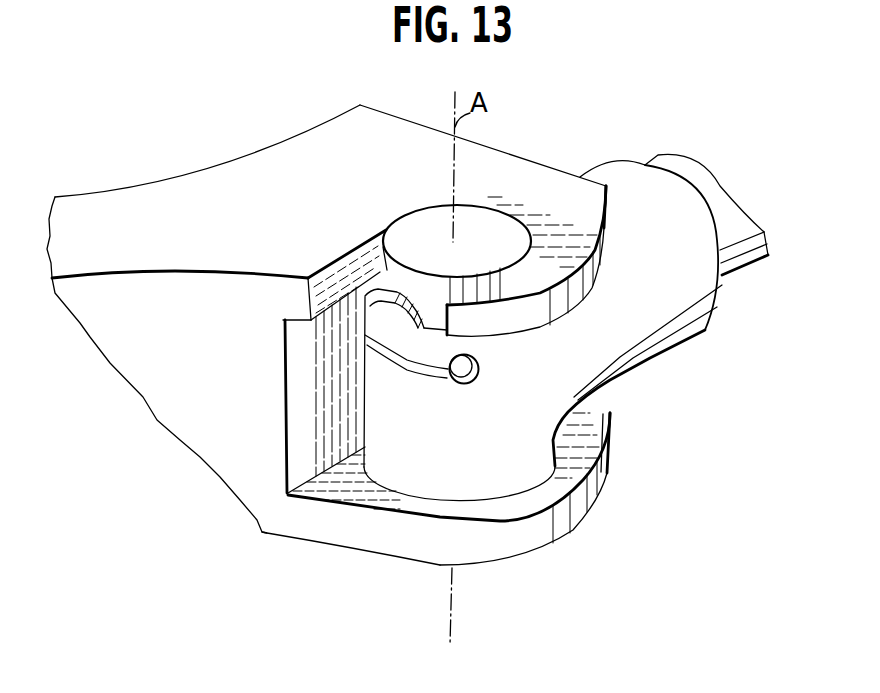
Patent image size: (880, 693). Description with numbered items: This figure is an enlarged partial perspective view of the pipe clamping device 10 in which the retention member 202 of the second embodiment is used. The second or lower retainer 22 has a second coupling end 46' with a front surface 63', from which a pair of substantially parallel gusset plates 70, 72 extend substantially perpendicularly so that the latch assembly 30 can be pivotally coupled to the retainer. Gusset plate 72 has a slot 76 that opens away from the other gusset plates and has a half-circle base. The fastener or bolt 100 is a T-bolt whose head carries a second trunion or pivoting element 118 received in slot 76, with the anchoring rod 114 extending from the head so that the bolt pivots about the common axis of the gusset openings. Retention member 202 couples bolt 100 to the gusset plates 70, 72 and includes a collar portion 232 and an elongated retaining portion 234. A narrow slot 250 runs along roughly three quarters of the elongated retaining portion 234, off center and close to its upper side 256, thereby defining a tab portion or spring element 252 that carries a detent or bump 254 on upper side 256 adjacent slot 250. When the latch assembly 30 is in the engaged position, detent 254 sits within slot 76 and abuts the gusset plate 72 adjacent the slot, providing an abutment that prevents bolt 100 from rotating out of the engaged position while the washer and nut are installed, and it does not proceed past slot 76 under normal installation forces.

The pipe clamping device 10 is at (186, 148).
The second or lower retainer 22 is at (243, 157).
The second coupling end 46' is at (437, 128).
The slot 76 is at (338, 276).
The front surface 63' is at (296, 398).
The second trunion or pivoting element 118 is at (417, 223).
The gusset plate 72 is at (562, 240).
The upper side of elongated retaining portion 256 is at (450, 313).
The detent or bump 254 is at (397, 294).
The tab portion or spring element 252 is at (427, 342).
The slot 250 is at (440, 376).
The latch assembly 30 is at (534, 328).
The fastener or bolt 100 is at (717, 118).
The collar portion 232 is at (683, 227).
The anchoring end or rod 114 is at (790, 228).
The retention member 202 is at (704, 339).
The gusset plate 70 is at (580, 440).
The elongated retaining portion 234 is at (410, 478).